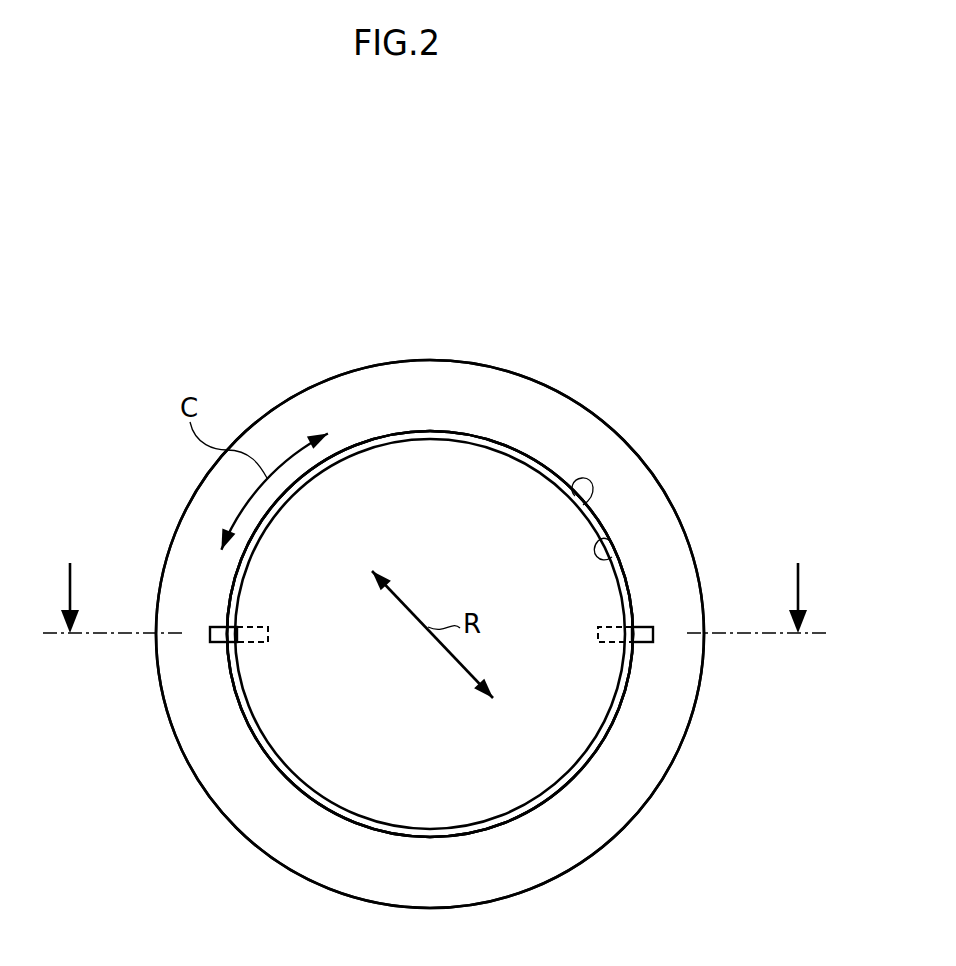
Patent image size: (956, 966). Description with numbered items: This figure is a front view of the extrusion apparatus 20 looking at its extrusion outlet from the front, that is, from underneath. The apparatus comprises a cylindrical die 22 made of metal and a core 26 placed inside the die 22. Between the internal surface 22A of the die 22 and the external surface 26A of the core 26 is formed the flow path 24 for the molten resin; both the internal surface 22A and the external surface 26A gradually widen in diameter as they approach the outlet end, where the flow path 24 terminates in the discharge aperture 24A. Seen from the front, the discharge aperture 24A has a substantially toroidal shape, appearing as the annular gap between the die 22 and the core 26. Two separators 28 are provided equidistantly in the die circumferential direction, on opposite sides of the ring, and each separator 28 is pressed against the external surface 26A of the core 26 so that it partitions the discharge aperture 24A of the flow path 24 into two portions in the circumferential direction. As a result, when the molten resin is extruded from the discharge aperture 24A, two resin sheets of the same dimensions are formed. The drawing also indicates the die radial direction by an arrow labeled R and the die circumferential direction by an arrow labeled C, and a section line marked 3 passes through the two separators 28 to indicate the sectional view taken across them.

The extrusion apparatus 20 is at (127, 378).
The die 22 is at (644, 453).
The internal surface of the die 22A is at (618, 553).
The flow path 24 is at (641, 331).
The discharge aperture 24A is at (512, 445).
The core 26 is at (553, 475).
The external surface of the core 26A is at (583, 505).
The separator 28 is at (215, 645).
The section line 3- 3 is at (440, 598).